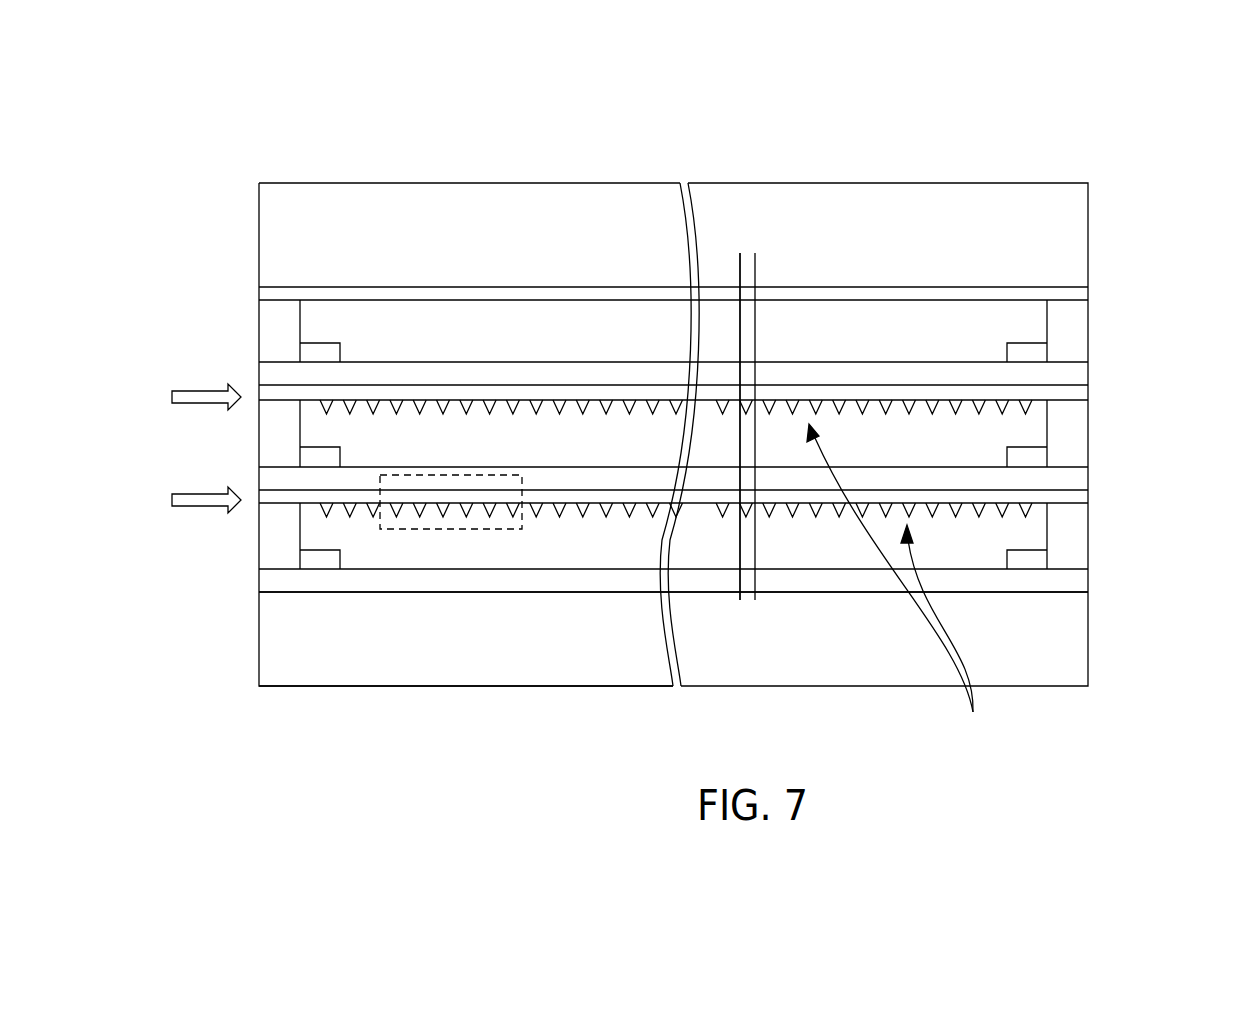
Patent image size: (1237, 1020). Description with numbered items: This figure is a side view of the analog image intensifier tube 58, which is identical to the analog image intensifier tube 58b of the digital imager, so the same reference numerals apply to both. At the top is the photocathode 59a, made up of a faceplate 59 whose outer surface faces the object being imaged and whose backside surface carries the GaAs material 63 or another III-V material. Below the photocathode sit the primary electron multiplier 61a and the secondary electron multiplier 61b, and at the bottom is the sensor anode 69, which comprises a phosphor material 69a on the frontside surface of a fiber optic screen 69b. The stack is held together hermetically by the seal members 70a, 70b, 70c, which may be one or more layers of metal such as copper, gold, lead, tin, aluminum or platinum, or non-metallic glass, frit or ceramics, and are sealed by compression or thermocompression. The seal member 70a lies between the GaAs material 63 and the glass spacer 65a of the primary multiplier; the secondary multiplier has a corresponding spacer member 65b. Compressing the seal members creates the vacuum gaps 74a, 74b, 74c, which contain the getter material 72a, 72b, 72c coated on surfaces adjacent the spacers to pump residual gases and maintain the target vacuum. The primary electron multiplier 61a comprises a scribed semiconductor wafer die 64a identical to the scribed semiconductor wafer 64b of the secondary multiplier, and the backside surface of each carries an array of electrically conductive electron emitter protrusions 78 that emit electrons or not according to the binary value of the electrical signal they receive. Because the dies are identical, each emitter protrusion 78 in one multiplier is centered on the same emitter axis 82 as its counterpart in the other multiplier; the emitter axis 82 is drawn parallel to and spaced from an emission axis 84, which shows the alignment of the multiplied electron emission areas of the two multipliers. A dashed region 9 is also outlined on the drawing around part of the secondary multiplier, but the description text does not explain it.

The analog image intensifier tube 58 is at (630, 369).
The analog image intensifier tube 58b is at (630, 434).
The faceplate 59 is at (1075, 213).
The GaAs material 63 is at (710, 277).
The photocathode 59a is at (744, 237).
The seal member 70a is at (669, 323).
The getter material 72a is at (298, 352).
The vacuum gap 74a is at (1035, 332).
The glass spacer 65a is at (1060, 378).
The scribed semiconductor wafer die 64a is at (1077, 392).
The primary electron multiplier 61a is at (744, 382).
The seal member 70b is at (672, 441).
The getter material 72b is at (303, 457).
The vacuum gap 74b is at (1030, 422).
The spacer member 65b is at (1075, 472).
The scribed semiconductor wafer 64b is at (1077, 497).
The secondary electron multiplier 61b is at (744, 502).
The seal member 70c is at (671, 545).
The getter material 72c is at (300, 560).
The vacuum gap 74c is at (1035, 525).
The phosphor material 69a is at (1058, 575).
The fiber optic screen 69b is at (1043, 623).
The sensor anode 69 is at (739, 630).
The emitter axis 82 is at (757, 268).
The emission axis 84 is at (737, 275).
The electron emitter protrusion 78 is at (895, 586).
The detail region of FIG. 9 is at (522, 529).